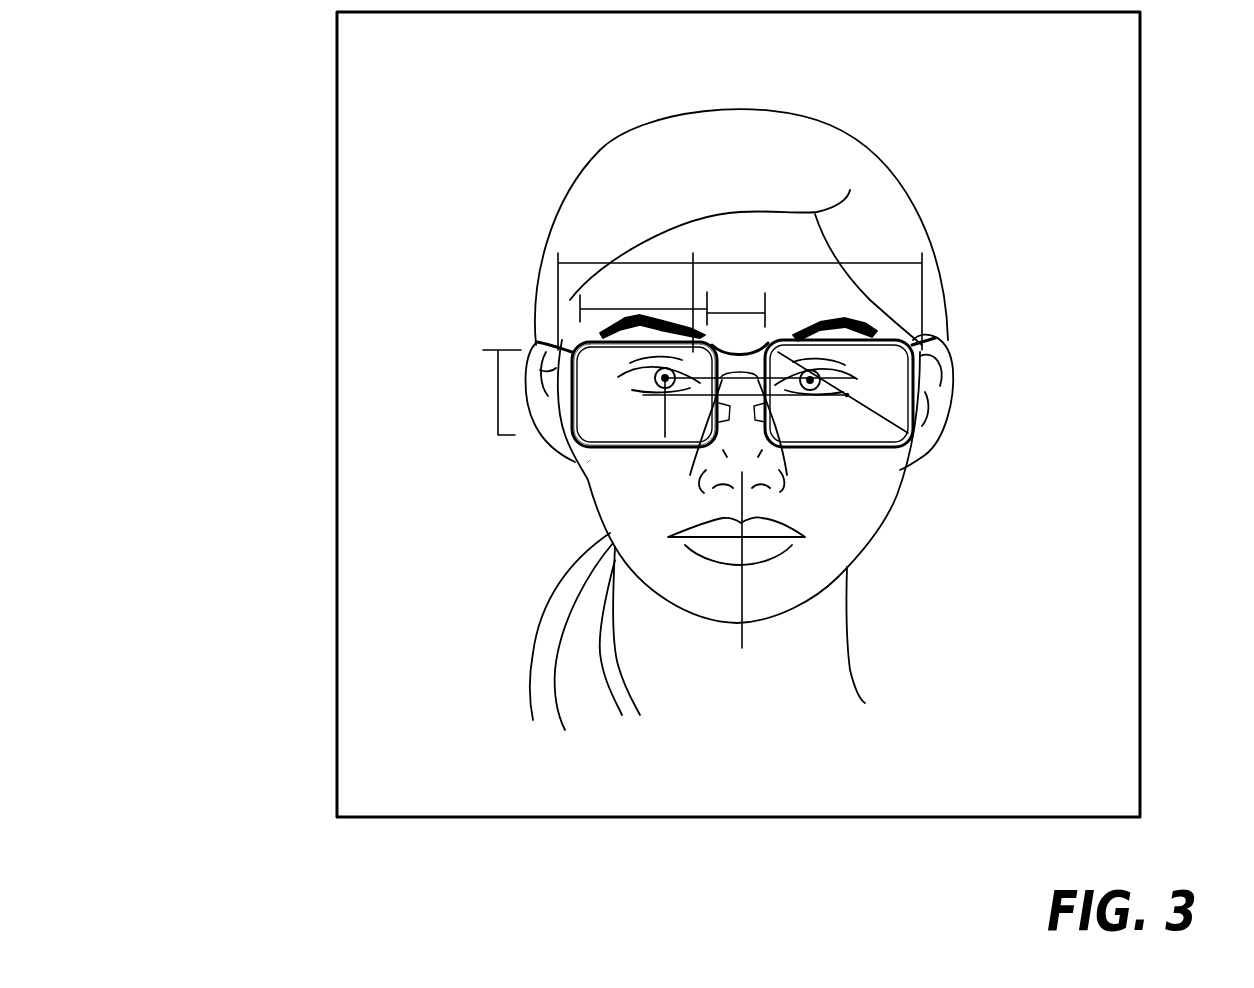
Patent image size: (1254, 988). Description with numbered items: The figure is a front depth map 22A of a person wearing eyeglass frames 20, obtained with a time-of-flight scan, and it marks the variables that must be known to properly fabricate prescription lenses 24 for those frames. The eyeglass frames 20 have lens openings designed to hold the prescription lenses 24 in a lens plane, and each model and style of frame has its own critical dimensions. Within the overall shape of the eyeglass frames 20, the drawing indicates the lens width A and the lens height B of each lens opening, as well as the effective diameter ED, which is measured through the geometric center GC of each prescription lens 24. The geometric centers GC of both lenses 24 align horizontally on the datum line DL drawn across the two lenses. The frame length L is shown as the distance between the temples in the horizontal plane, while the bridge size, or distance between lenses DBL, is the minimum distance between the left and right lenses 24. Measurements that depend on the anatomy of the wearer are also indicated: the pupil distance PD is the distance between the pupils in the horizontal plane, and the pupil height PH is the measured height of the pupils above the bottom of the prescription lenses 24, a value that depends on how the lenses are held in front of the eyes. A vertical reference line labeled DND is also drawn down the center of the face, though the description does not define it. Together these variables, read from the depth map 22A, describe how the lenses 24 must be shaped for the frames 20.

The front depth map 22A is at (336, 242).
The eyeglass frames 20 is at (537, 342).
The prescription lenses 24 is at (597, 402).
The frame length L is at (652, 262).
The lens width A is at (655, 309).
The distance between lenses DBL is at (735, 315).
The pupil distance PD is at (746, 368).
The lens height B is at (497, 394).
The datum line DL is at (741, 440).
The effective diameter ED is at (880, 417).
The geometric center GC is at (847, 395).
The pupil height PH is at (587, 463).
The nose-to-chin distance line DND is at (745, 580).